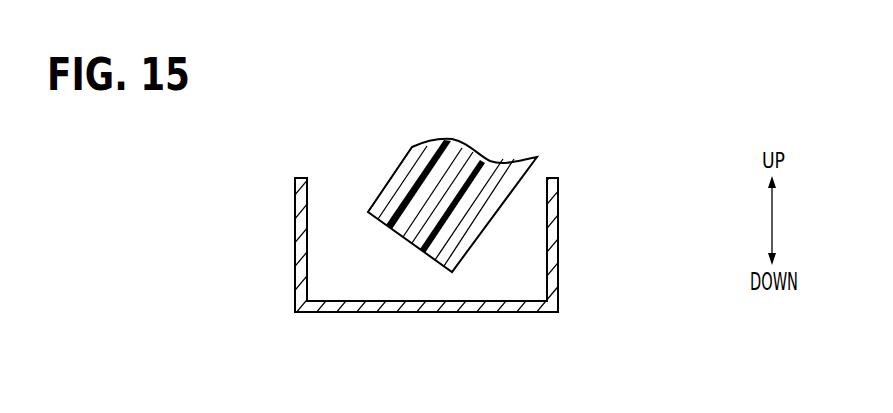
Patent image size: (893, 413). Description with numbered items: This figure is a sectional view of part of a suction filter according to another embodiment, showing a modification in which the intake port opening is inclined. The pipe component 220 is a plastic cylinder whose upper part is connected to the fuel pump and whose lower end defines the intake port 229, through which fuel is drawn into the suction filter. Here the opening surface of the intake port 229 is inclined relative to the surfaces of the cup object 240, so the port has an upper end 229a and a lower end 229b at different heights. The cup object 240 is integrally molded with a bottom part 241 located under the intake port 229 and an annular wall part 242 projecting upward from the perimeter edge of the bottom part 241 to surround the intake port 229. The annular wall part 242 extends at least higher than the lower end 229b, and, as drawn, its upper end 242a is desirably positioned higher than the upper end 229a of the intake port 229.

The pipe component 220 is at (485, 202).
The intake port 229 is at (395, 230).
The upper end of the intake port 229a is at (402, 232).
The lower end of the intake port 229b is at (423, 253).
The cup object 240 is at (467, 318).
The bottom part 241 is at (510, 312).
The annular wall part 242 is at (553, 265).
The side wall upper end 242a is at (298, 180).